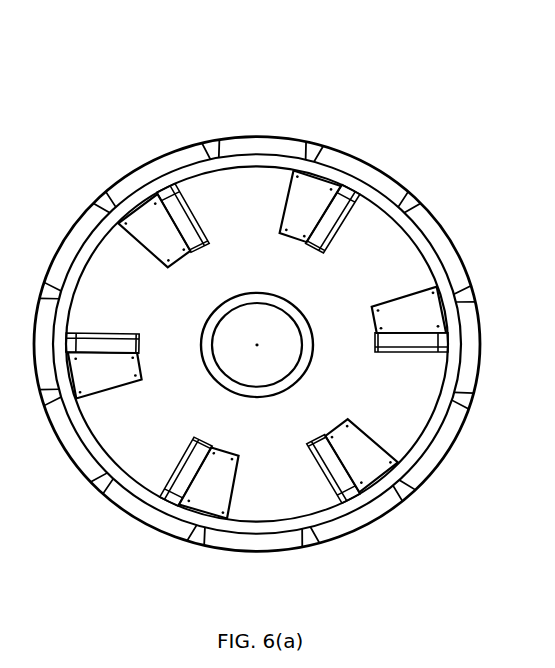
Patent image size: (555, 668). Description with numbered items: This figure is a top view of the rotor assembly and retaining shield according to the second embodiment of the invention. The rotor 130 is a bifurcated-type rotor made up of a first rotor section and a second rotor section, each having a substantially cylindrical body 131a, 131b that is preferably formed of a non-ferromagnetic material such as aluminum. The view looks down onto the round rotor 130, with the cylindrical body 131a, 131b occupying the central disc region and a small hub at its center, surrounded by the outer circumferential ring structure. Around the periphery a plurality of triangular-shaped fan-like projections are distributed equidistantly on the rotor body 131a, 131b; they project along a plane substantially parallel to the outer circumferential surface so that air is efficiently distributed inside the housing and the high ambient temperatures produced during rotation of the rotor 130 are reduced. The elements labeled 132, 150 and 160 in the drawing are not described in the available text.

The rotor 130 is at (128, 125).
The cylindrical body 131a is at (250, 195).
The cylindrical body 131b is at (265, 232).
The permanent magnet 132 is at (408, 467).
The rotor rim band 150 is at (445, 253).
The outer ring 160 is at (398, 178).